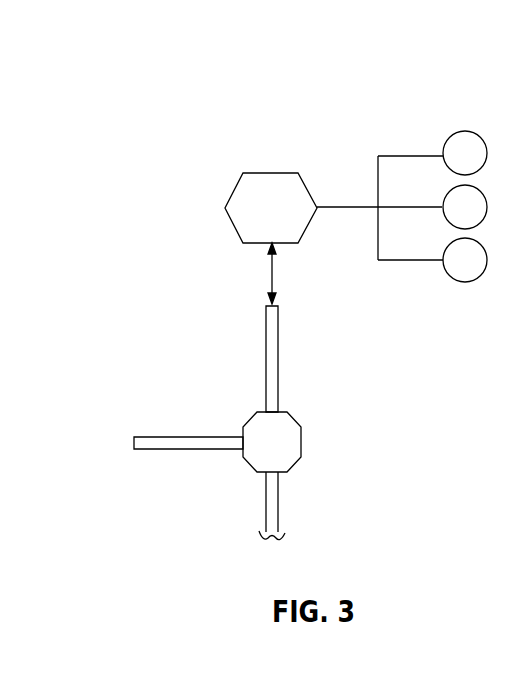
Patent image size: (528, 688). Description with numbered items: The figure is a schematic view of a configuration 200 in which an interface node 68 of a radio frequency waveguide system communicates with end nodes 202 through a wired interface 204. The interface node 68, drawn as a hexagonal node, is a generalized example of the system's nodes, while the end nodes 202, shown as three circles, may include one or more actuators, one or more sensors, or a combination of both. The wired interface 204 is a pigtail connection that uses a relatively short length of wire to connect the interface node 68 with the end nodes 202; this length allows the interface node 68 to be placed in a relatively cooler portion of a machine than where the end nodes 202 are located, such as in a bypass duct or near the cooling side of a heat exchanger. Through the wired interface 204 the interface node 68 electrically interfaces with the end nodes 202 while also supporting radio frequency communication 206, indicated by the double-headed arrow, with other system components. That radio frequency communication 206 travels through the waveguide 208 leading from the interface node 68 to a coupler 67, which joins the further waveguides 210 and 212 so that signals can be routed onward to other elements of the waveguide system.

The configuration 200 is at (194, 61).
The end nodes 202 is at (458, 123).
The wired interface 204 is at (328, 203).
The interface node 68 is at (233, 193).
The radio frequency communication 206 is at (270, 275).
The waveguide 208 is at (279, 330).
The waveguide 210 is at (155, 436).
The coupler 67 is at (302, 442).
The waveguide 212 is at (279, 511).